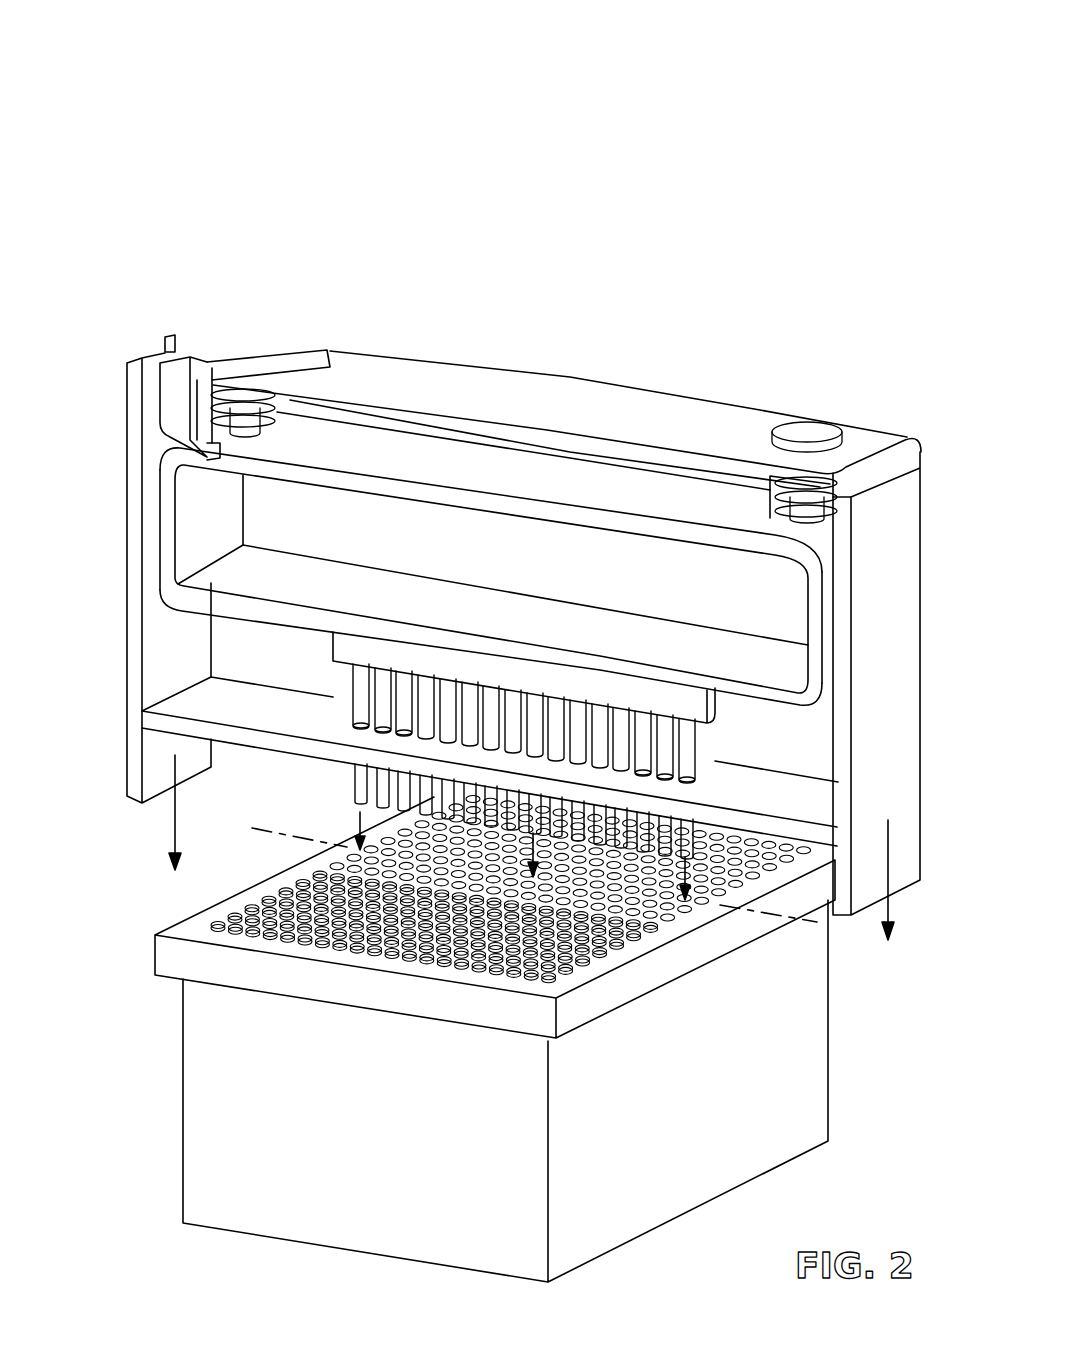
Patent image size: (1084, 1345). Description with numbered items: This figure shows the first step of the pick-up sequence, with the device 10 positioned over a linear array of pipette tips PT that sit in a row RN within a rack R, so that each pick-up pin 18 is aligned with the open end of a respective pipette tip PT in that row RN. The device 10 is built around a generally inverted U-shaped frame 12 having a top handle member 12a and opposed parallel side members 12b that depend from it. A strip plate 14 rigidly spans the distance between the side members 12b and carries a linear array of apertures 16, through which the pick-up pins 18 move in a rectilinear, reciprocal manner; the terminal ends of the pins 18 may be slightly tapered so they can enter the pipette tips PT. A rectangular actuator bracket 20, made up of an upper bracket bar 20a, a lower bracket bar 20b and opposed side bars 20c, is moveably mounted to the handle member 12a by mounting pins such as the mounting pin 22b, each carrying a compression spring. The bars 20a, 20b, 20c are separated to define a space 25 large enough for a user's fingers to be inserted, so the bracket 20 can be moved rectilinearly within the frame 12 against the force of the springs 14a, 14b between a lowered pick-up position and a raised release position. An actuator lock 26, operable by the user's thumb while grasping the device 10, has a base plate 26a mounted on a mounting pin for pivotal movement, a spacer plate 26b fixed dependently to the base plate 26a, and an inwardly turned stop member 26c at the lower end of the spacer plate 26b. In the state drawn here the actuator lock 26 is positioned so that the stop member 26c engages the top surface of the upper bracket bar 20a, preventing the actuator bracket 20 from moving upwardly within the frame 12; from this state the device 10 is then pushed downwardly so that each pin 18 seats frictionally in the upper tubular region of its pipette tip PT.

The device 10 is at (752, 376).
The frame 12 is at (114, 518).
The top handle member 12a is at (535, 403).
The side members 12b is at (190, 648).
The strip plate 14 is at (241, 720).
The spring 14a is at (273, 413).
The spring 14b is at (810, 497).
The apertures 16 is at (405, 737).
The pick-up pins 18 is at (366, 724).
The actuator bracket 20 is at (140, 566).
The upper bracket bar 20a is at (392, 462).
The lower bracket bar 20b is at (310, 597).
The side bars 20c is at (237, 512).
The mounting pin 22b is at (811, 437).
The space 25 is at (288, 540).
The actuator lock 26 is at (163, 318).
The base plate 26a is at (213, 363).
The spacer plate 26b is at (175, 410).
The stop member 26c is at (233, 457).
The pipette tips PT is at (415, 907).
The rack R is at (378, 1138).
The row RN is at (790, 903).